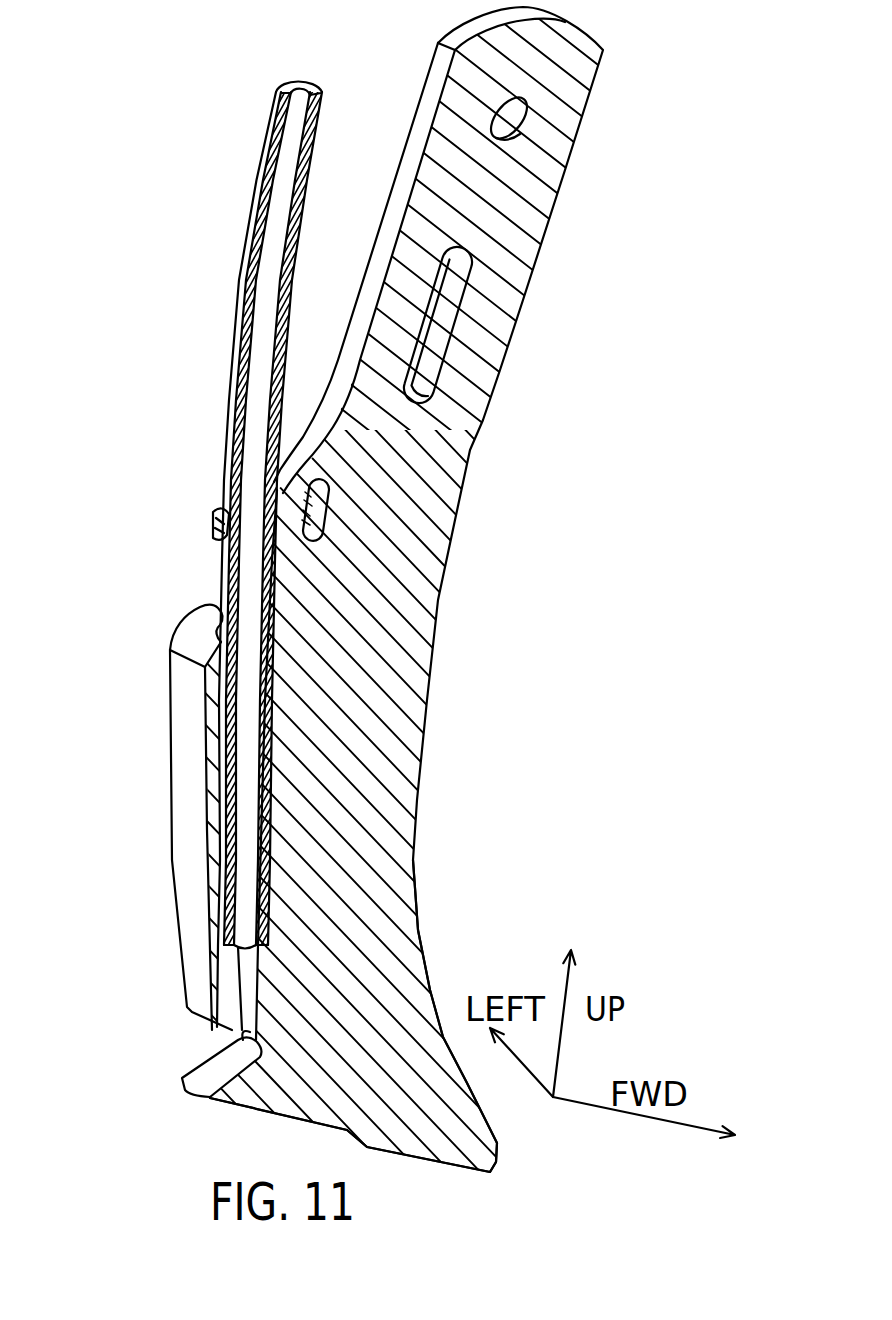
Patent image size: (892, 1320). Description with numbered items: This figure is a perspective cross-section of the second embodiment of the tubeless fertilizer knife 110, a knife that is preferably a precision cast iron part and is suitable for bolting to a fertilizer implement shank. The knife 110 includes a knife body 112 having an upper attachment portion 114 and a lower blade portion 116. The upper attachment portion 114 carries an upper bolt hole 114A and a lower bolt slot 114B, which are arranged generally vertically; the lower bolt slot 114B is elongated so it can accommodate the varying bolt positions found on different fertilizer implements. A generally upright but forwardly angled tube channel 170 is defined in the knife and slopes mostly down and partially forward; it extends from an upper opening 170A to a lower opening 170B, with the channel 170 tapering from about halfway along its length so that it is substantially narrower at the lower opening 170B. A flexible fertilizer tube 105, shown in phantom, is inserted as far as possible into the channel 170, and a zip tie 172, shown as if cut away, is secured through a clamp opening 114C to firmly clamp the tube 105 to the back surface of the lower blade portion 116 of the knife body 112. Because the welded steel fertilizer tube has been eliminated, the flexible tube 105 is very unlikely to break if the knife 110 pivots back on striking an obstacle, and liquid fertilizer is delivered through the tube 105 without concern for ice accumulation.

The flexible fertilizer tube 105 is at (256, 350).
The fertilizer knife 110 is at (446, 660).
The knife body 112 is at (489, 555).
The upper attachment portion 114 is at (450, 198).
The upper bolt hole 114A is at (532, 133).
The lower bolt slot 114B is at (443, 358).
The clamp opening 114C is at (330, 498).
The lower blade portion 116 is at (397, 843).
The tube channel 170 is at (445, 660).
The upper opening 170A is at (212, 604).
The lower opening 170B is at (236, 1042).
The zip tie 172 is at (213, 518).